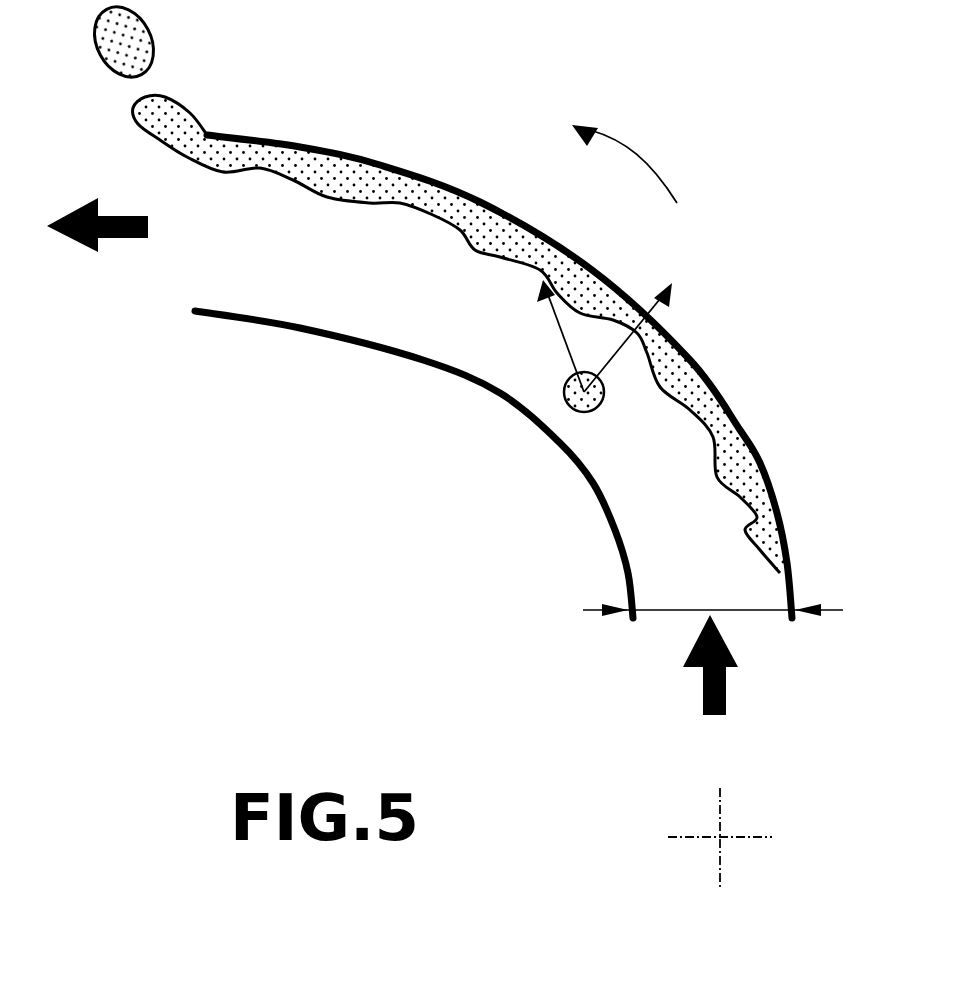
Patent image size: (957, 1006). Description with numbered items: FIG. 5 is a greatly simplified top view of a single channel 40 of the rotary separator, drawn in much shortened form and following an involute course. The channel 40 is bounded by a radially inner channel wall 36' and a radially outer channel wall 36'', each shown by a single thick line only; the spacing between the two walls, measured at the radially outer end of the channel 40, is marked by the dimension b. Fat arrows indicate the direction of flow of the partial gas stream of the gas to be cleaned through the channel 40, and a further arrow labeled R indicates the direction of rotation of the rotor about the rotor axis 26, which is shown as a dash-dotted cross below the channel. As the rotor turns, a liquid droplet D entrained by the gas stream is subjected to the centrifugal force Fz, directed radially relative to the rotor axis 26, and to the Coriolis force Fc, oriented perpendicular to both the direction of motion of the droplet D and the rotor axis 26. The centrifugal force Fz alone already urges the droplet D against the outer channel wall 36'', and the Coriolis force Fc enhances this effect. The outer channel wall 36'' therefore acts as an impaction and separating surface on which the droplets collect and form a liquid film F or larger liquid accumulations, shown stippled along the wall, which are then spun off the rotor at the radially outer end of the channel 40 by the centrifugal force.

The liquid film F is at (280, 160).
The direction of rotation of the rotor R is at (633, 162).
The centrifugal force Fz is at (567, 348).
The Coriolis force Fc is at (613, 357).
The liquid droplet D is at (566, 402).
The channel 40 is at (335, 272).
The radially outer channel wall 36'' is at (539, 376).
The radially inner channel wall 36' is at (414, 464).
The width of flow channel b is at (747, 610).
The rotor axis 26 is at (720, 837).